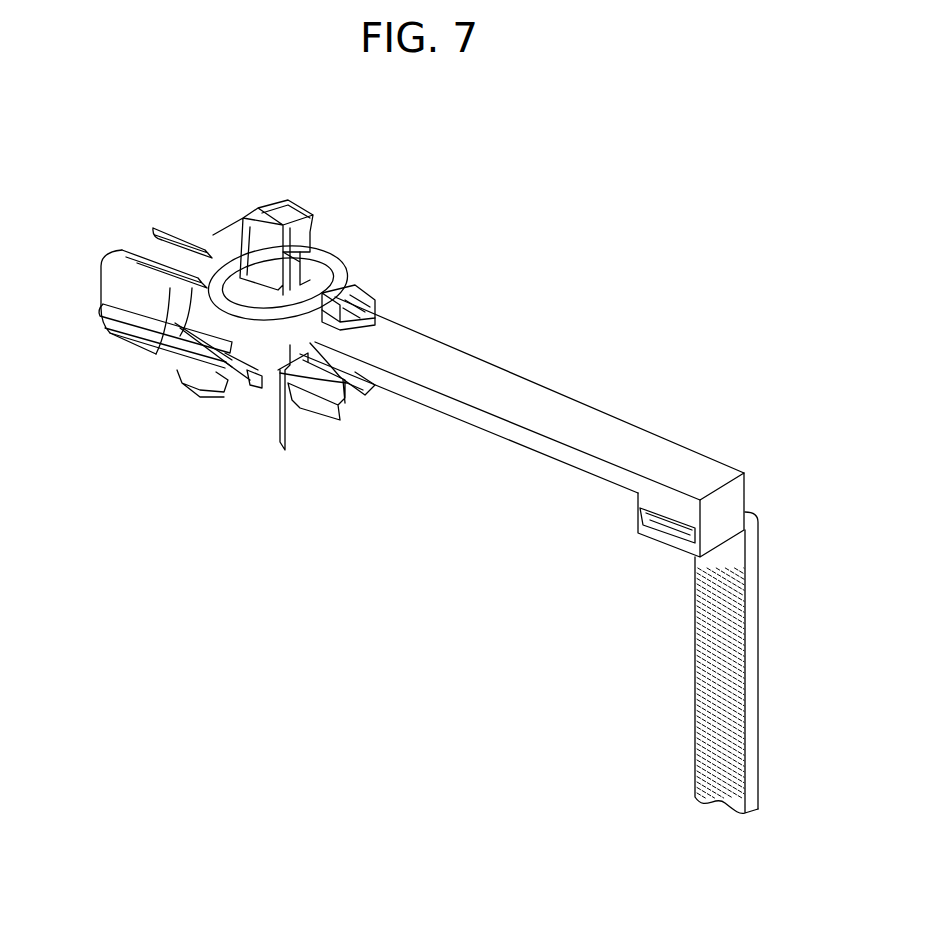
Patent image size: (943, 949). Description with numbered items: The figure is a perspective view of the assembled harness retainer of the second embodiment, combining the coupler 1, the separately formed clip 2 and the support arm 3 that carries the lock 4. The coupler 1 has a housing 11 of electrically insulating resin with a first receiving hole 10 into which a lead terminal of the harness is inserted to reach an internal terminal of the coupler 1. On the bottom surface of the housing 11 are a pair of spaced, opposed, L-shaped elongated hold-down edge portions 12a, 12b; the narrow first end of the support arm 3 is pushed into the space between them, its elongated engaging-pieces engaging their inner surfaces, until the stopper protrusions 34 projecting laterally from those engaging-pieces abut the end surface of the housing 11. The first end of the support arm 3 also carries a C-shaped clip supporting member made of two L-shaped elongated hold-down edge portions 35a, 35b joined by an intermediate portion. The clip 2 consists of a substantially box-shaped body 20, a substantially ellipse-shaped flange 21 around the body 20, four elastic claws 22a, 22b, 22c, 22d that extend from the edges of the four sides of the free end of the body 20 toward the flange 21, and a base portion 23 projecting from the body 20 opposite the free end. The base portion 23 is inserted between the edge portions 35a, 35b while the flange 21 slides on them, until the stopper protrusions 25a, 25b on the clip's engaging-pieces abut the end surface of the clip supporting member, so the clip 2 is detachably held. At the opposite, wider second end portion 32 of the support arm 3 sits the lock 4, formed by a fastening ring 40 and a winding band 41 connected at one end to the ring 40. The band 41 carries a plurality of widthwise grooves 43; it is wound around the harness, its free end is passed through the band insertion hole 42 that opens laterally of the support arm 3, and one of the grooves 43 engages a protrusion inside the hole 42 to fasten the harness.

The coupler 1 is at (260, 455).
The clip 2 is at (261, 190).
The support arm 3 is at (510, 380).
The lock 4 is at (550, 546).
The first receiving hole 10 is at (362, 392).
The housing 11 is at (135, 243).
The elongated hold-down edge portion 12a is at (265, 398).
The elongated hold-down edge portion 12b is at (352, 293).
The substantially box-shaped body 20 is at (243, 380).
The substantially ellipse-shaped flange 21 is at (185, 358).
The elastic claw 22a is at (200, 232).
The elastic claw 22b is at (318, 228).
The elastic claw 22c is at (310, 205).
The elastic claw 22d is at (213, 228).
The base portion 23 is at (318, 322).
The stopper protrusion 25a is at (300, 410).
The stopper protrusion 25b is at (365, 317).
The second end portion 32 is at (684, 468).
The stopper protrusion 34 is at (350, 310).
The elongated hold-down edge portion 35a is at (162, 345).
The elongated hold-down edge portion 35b is at (345, 265).
The fastening ring 40 is at (668, 540).
The winding band 41 is at (752, 575).
The band insertion hole 42 is at (637, 528).
The grooves 43 is at (708, 676).